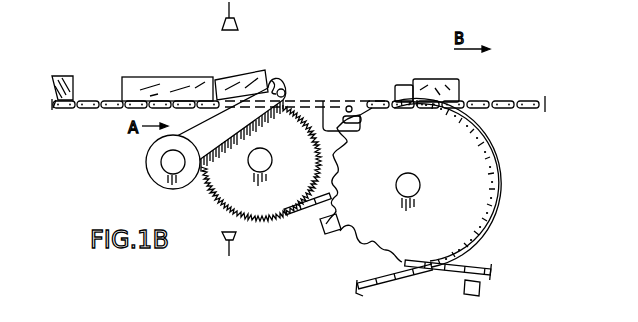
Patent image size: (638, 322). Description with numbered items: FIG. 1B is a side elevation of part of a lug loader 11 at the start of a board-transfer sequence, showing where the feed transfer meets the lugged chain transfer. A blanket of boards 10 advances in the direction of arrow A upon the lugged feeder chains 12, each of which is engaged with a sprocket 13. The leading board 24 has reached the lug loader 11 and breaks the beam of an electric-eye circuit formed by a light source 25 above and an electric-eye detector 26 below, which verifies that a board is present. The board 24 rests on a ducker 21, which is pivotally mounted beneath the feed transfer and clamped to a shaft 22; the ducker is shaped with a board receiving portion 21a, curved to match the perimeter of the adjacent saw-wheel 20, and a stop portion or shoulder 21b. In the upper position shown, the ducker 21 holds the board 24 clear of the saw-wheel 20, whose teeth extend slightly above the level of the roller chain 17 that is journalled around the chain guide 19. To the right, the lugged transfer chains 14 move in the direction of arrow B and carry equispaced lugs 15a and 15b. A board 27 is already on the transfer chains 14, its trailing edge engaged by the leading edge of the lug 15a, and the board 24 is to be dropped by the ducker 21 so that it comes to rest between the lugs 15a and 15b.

The blanket of boards 10 is at (100, 84).
The lug loader 11 is at (321, 87).
The lugged feeder chains 12 is at (89, 110).
The sprocket 13 is at (350, 240).
The lugged transfer chains 14 is at (500, 109).
The lug 15a is at (400, 84).
The lug 15b is at (321, 226).
The roller chain 17 is at (325, 170).
The chain guide 19 is at (334, 103).
The saw-wheel 20 is at (226, 196).
The ducker 21 is at (256, 124).
The board receiving portion 21a is at (286, 92).
The stop portion 21b is at (274, 82).
The shaft 22 is at (168, 168).
The leading board 24 is at (236, 74).
The light source 25 is at (238, 22).
The electric-eye detector 26 is at (232, 244).
The board 27 is at (458, 80).